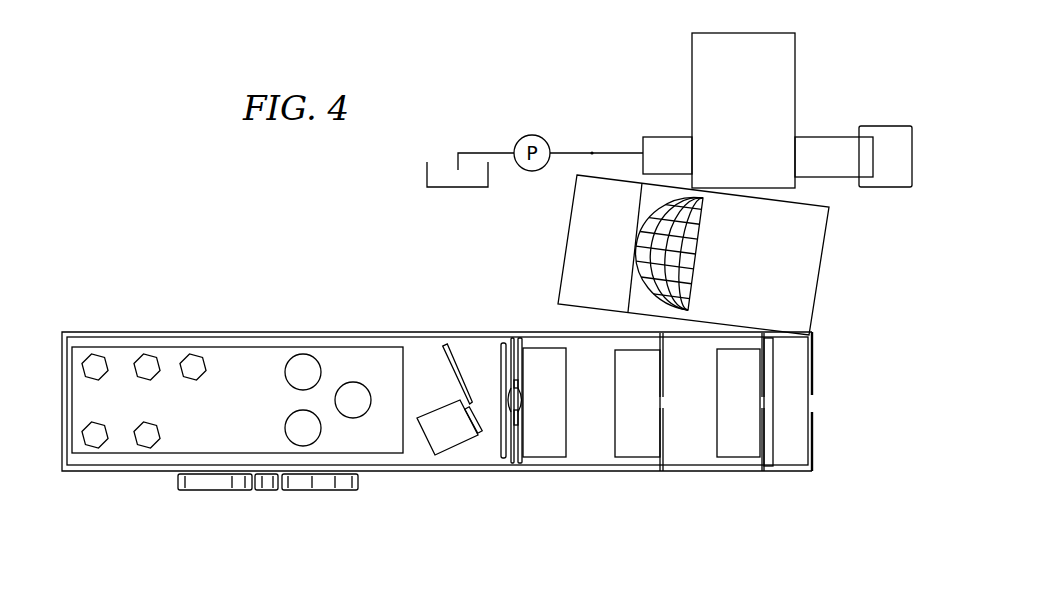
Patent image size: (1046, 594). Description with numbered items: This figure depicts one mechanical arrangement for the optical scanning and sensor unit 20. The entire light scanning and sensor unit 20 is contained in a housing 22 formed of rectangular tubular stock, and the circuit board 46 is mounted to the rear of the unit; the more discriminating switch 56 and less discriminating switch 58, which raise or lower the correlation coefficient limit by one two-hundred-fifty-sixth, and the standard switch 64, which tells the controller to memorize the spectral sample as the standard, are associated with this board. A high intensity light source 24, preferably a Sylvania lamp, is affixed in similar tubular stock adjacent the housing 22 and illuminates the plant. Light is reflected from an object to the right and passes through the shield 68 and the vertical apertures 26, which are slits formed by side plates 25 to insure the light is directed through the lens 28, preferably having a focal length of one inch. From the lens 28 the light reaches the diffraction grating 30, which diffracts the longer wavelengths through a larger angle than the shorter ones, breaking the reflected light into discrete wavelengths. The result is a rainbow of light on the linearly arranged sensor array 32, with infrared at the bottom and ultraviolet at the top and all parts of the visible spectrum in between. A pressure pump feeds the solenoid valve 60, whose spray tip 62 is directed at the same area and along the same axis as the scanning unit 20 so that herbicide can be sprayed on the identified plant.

The scanning and sensing unit 20 is at (183, 297).
The housing 22 is at (295, 332).
The high intensity lamp 24 is at (728, 268).
The side plates 25 is at (658, 445).
The vertical apertures 26 is at (620, 433).
The lens 28 is at (540, 390).
The diffraction grating 30 is at (500, 367).
The sensor array 32 is at (439, 403).
The circuit board 46 is at (168, 413).
The more discriminating switch 56 is at (290, 375).
The less discriminating switch 58 is at (290, 428).
The solenoid valve 60 is at (690, 83).
The spray tip 62 is at (887, 125).
The standard switch 64 is at (360, 394).
The shield 68 is at (813, 440).